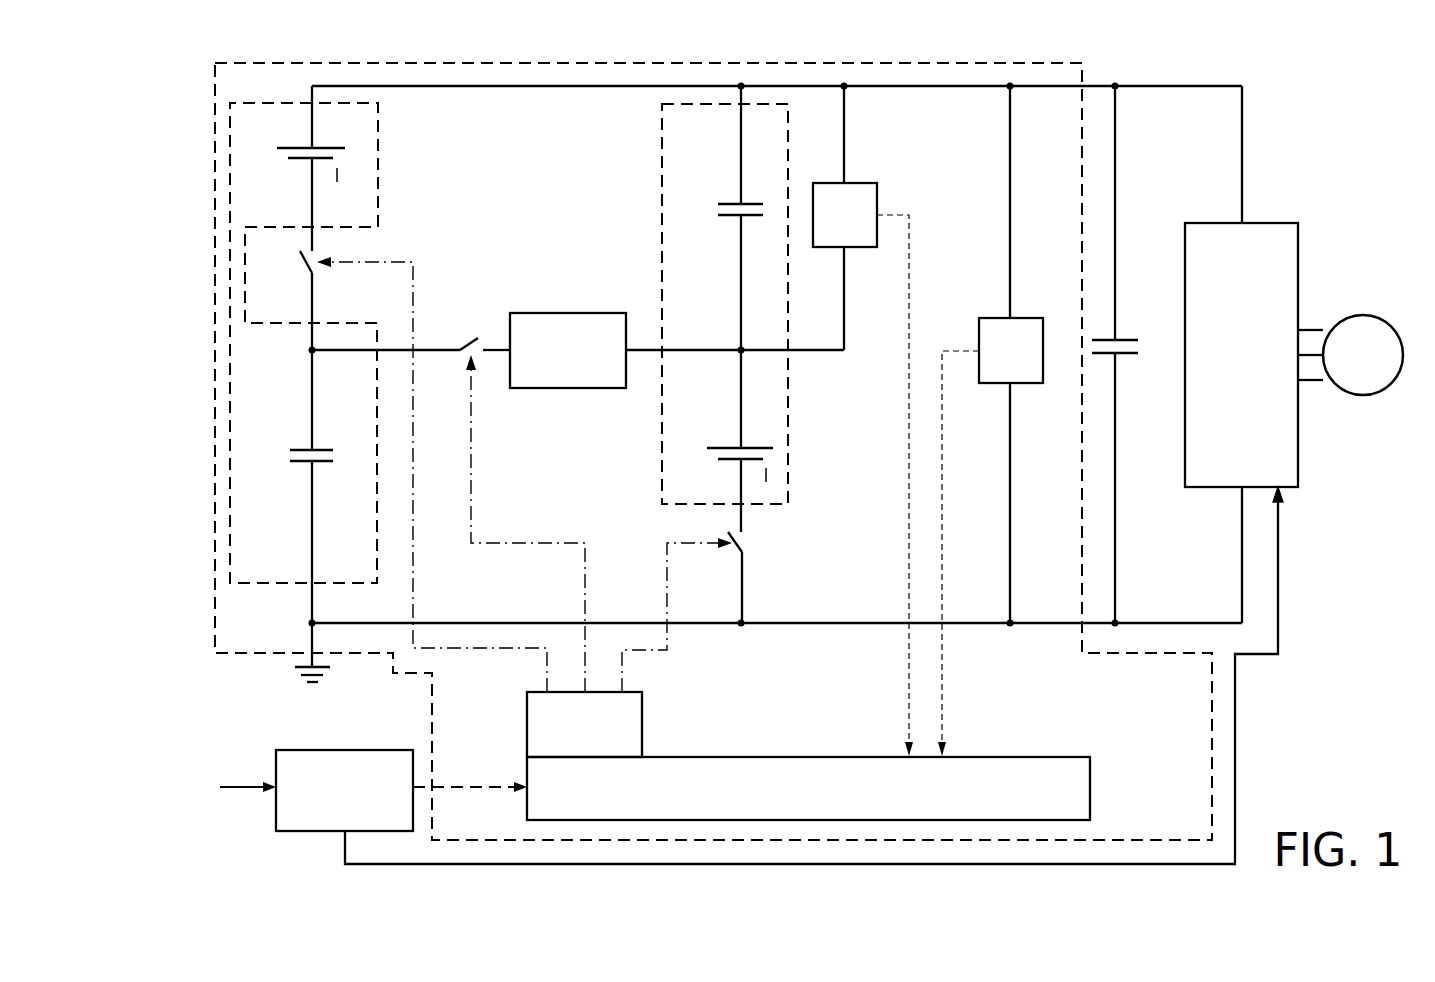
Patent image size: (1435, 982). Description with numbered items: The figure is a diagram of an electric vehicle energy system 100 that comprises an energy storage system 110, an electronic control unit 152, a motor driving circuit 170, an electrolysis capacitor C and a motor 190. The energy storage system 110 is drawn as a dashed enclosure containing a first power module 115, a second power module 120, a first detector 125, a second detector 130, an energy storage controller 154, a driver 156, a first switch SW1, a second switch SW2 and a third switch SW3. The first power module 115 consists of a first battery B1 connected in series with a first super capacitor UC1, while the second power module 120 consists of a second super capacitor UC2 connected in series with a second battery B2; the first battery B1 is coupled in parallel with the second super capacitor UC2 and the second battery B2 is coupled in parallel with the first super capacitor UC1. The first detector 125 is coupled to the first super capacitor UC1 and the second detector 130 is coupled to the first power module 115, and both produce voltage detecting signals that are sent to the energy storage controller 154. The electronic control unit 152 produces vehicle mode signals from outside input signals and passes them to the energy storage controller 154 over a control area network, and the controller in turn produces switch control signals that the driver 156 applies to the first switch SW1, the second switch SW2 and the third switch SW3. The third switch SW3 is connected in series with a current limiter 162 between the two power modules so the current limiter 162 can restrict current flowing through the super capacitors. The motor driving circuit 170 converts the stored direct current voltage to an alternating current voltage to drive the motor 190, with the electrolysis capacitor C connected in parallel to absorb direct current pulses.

The electric vehicle energy system 100 is at (1359, 89).
The energy storage system 110 is at (215, 106).
The first power module 115 is at (663, 128).
The second power module 120 is at (380, 120).
The first detector 125 is at (866, 183).
The second detector 130 is at (1028, 318).
The electronic control unit 152 is at (367, 750).
The energy storage controller 154 is at (1091, 786).
The driver 156 is at (527, 726).
The current limiter 162 is at (566, 313).
The motor driving circuit 170 is at (1284, 223).
The motor 190 is at (1364, 315).
The first battery B1 is at (726, 438).
The second battery B2 is at (302, 174).
The first super capacitor UC1 is at (725, 196).
The second super capacitor UC2 is at (300, 440).
The first switch SW1 is at (732, 566).
The second switch SW2 is at (302, 271).
The third switch SW3 is at (468, 338).
The electrolysis capacitor C is at (1130, 334).